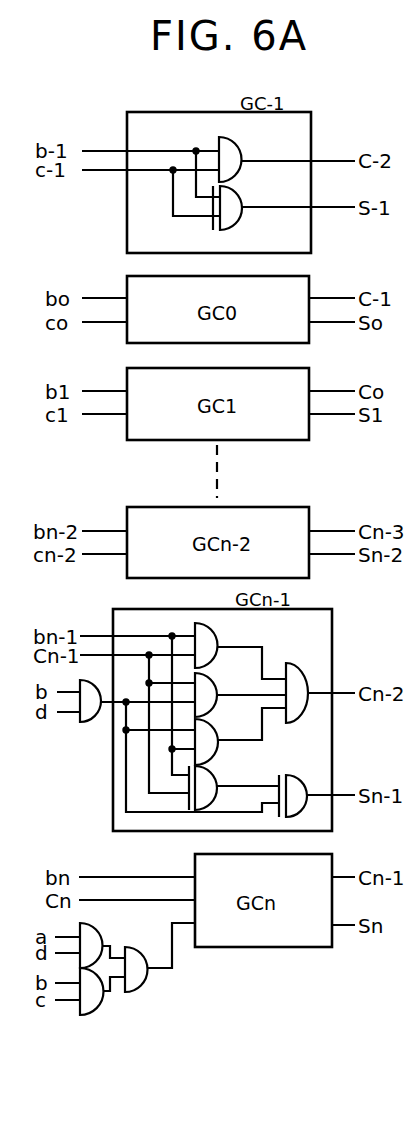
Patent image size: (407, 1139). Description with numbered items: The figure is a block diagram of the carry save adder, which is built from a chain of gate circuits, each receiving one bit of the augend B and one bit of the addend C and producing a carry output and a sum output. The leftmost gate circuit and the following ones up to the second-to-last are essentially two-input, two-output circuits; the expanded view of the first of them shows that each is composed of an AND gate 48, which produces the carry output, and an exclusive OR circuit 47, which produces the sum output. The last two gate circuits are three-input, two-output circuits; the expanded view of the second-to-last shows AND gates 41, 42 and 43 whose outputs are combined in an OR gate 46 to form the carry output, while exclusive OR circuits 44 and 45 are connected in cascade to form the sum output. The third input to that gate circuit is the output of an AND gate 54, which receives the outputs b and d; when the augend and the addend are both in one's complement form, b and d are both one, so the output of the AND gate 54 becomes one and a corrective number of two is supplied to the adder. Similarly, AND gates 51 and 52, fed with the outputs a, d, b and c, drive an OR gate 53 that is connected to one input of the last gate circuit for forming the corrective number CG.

The AND gate 41 is at (240, 651).
The AND gate 42 is at (240, 694).
The AND gate 43 is at (240, 736).
The exclusive OR circuit 44 is at (234, 787).
The exclusive OR circuit 45 is at (317, 791).
The OR gate 46 is at (320, 686).
The exclusive OR circuit 47 is at (284, 207).
The AND gate 48 is at (287, 159).
The AND gate 51 is at (90, 943).
The AND gate 52 is at (90, 996).
The OR gate 53 is at (160, 960).
The AND gate 54 is at (126, 715).